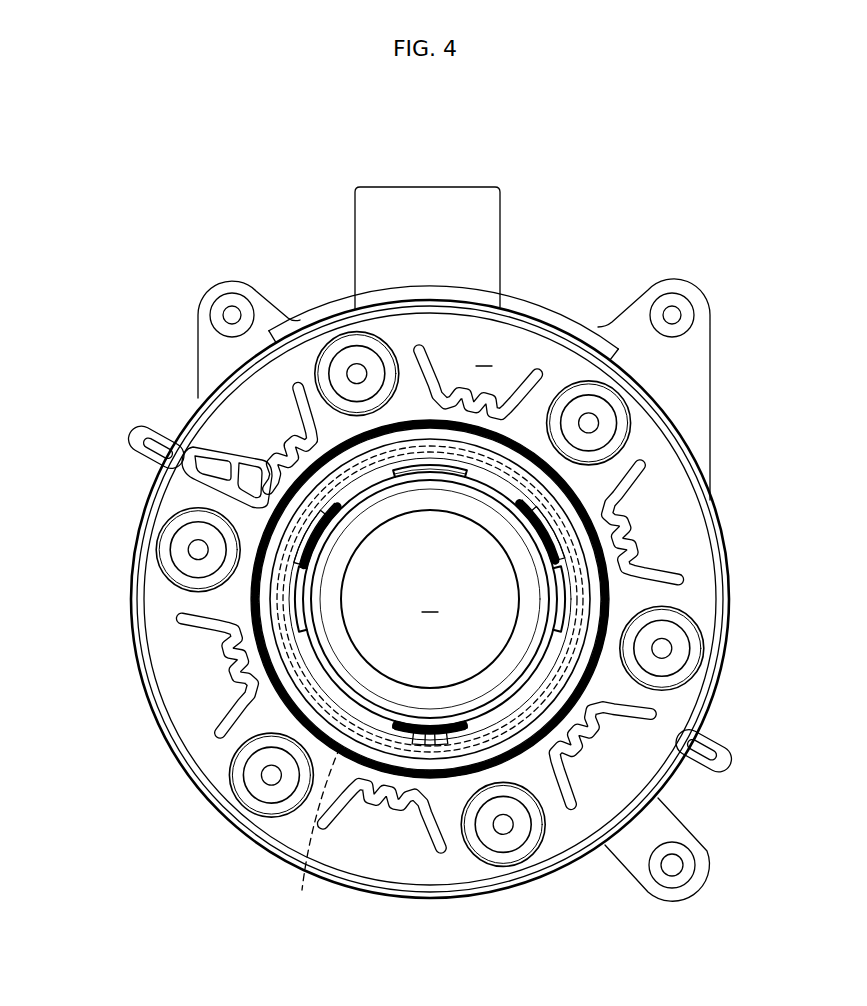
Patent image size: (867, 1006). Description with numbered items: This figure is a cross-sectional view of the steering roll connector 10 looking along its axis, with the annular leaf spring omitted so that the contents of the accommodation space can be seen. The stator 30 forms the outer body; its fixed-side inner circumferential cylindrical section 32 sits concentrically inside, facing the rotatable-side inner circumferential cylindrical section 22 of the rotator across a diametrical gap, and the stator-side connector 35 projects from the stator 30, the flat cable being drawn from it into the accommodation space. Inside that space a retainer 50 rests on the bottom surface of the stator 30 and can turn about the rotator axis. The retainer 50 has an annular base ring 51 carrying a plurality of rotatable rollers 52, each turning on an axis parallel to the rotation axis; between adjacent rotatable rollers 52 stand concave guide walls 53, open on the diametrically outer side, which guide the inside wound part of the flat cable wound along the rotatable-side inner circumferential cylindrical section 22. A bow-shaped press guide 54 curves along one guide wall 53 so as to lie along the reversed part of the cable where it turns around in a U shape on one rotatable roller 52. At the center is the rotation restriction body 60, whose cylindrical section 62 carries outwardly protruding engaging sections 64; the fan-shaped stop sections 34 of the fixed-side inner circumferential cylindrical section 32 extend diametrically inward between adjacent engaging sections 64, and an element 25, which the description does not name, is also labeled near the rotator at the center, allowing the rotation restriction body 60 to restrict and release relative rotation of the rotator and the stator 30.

The steering roll connector 10 is at (128, 240).
The rotatable-side inner circumferential cylindrical section 22 is at (516, 758).
The bearing holder 25 is at (483, 484).
The stator 30 is at (133, 641).
The fixed-side inner circumferential cylindrical section 32 is at (316, 836).
The stop section 34 is at (426, 467).
The stator-side connector 35 is at (470, 237).
The retainer 50 is at (721, 571).
The base ring 51 is at (700, 546).
The rotatable roller 52 is at (695, 650).
The guide wall 53 is at (283, 455).
The press guide 54 is at (210, 448).
The rotation restriction body 60 is at (344, 600).
The cylindrical section 62 is at (445, 737).
The engaging section 64 is at (347, 500).